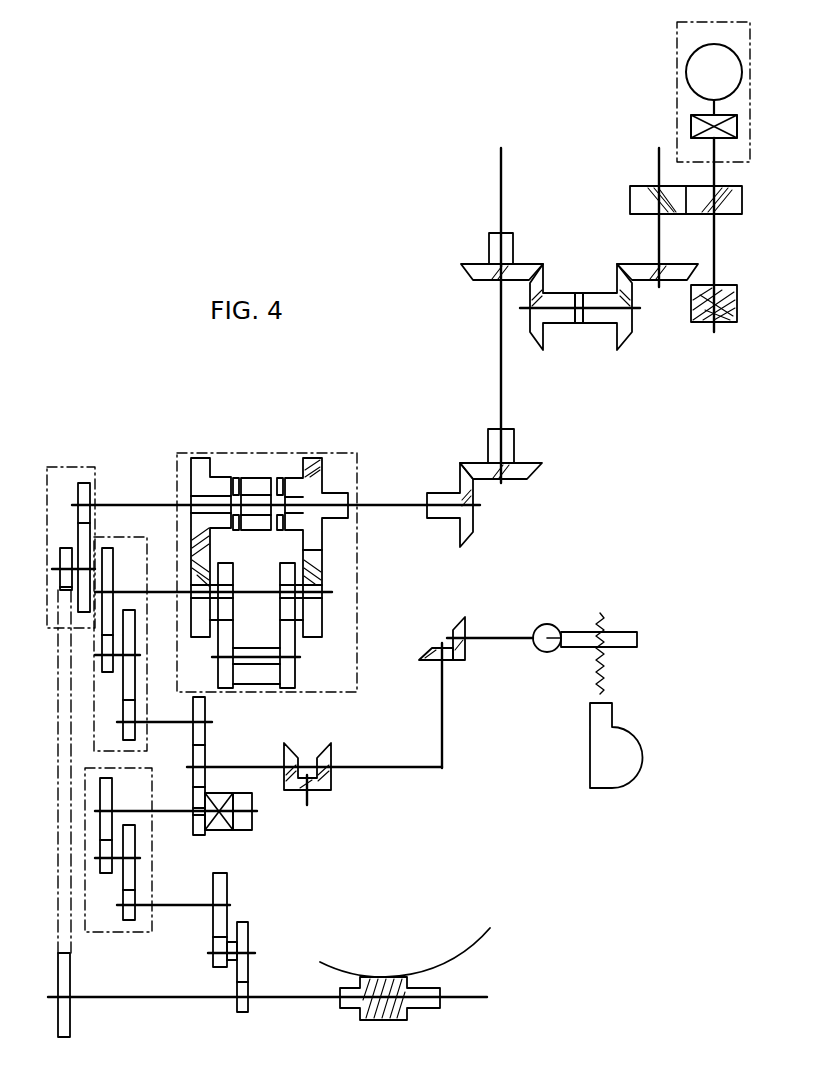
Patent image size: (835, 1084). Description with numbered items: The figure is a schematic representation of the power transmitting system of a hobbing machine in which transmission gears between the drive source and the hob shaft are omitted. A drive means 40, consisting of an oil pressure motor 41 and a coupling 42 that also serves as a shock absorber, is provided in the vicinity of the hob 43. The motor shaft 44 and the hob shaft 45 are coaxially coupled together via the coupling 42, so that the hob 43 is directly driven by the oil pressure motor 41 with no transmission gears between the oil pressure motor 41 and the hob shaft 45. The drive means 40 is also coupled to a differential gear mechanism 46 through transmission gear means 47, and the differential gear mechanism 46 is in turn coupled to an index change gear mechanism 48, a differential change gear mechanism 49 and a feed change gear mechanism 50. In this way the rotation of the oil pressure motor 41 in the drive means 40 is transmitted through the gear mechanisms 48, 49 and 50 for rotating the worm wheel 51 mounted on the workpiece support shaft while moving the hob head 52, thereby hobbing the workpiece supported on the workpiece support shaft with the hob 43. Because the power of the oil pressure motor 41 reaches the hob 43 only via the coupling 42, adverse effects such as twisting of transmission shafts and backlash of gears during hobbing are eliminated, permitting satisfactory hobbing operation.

The drive means 40 is at (750, 37).
The oil pressure motor 41 is at (741, 72).
The coupling 42 is at (737, 128).
The hob 43 is at (737, 305).
The motor shaft 44 is at (711, 102).
The hob shaft 45 is at (716, 248).
The differential gear mechanism 46 is at (333, 453).
The transmission gear means 47 is at (549, 323).
The index change gear mechanism 48 is at (47, 494).
The differential change gear mechanism 49 is at (93, 672).
The feed change gear mechanism 50 is at (85, 797).
The worm wheel 51 is at (467, 952).
The hob head 52 is at (646, 757).